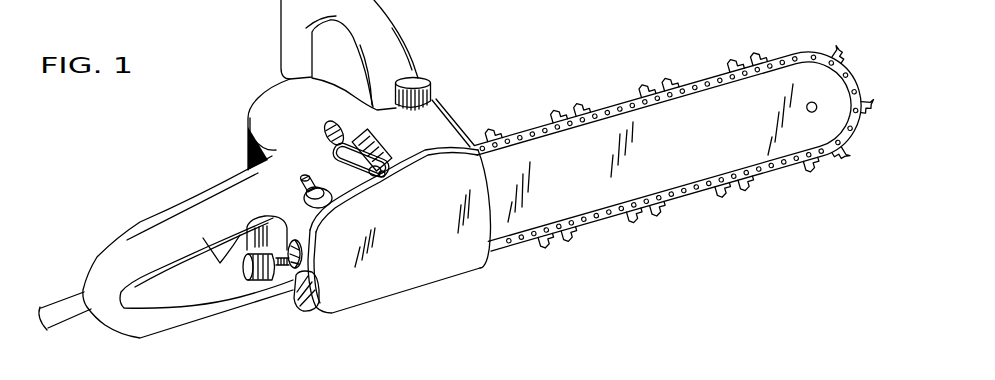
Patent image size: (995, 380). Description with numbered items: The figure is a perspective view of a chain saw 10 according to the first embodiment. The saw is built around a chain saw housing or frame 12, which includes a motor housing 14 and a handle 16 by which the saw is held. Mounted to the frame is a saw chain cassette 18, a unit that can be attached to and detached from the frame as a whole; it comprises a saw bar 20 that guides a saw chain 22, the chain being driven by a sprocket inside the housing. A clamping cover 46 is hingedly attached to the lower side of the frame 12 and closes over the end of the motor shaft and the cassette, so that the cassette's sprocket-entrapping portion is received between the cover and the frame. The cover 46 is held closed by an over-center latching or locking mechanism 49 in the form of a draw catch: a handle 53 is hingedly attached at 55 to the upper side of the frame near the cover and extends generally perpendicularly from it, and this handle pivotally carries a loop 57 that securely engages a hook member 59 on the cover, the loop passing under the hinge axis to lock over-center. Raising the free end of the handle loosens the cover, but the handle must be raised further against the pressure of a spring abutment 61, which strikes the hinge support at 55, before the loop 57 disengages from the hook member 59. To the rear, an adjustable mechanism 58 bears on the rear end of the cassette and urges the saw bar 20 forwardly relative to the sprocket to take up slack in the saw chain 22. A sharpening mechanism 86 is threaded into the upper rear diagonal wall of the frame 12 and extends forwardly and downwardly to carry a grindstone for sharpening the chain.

The chain saw 10 is at (233, 58).
The chain saw housing or frame 12 is at (450, 116).
The motor housing 14 is at (259, 128).
The handle 16 is at (160, 227).
The saw chain cassette 18 is at (723, 221).
The saw bar 20 is at (672, 162).
The saw chain 22 is at (727, 76).
The clamping cover 46 is at (473, 262).
The over-center latching or locking mechanism 49 is at (366, 152).
The handle 53 is at (333, 121).
The hinge 55 is at (362, 138).
The loop 57 is at (340, 163).
The adjustable mechanism 58 is at (273, 281).
The hook member 59 is at (378, 178).
The spring abutment 61 is at (384, 177).
The sharpening mechanism 86 is at (303, 178).